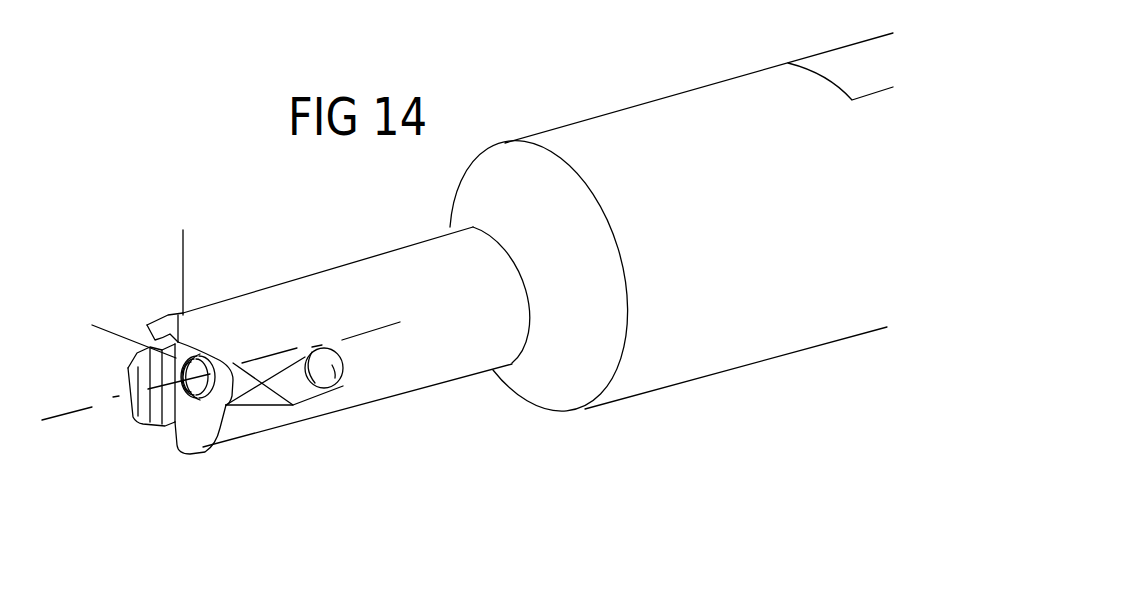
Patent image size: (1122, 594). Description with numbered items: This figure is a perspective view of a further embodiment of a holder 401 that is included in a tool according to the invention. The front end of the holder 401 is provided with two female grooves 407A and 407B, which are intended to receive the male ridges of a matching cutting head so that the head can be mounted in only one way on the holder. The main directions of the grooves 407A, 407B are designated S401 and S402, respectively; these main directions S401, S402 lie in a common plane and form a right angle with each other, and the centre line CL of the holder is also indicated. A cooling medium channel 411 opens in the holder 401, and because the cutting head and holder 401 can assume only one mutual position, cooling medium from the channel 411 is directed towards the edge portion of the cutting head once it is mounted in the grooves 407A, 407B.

The holder 401 is at (288, 258).
The groove 407A is at (167, 420).
The groove 407B is at (255, 410).
The cooling medium channel 411 is at (343, 386).
The main direction S401 is at (185, 258).
The main direction S402 is at (102, 330).
The center line CL is at (70, 412).